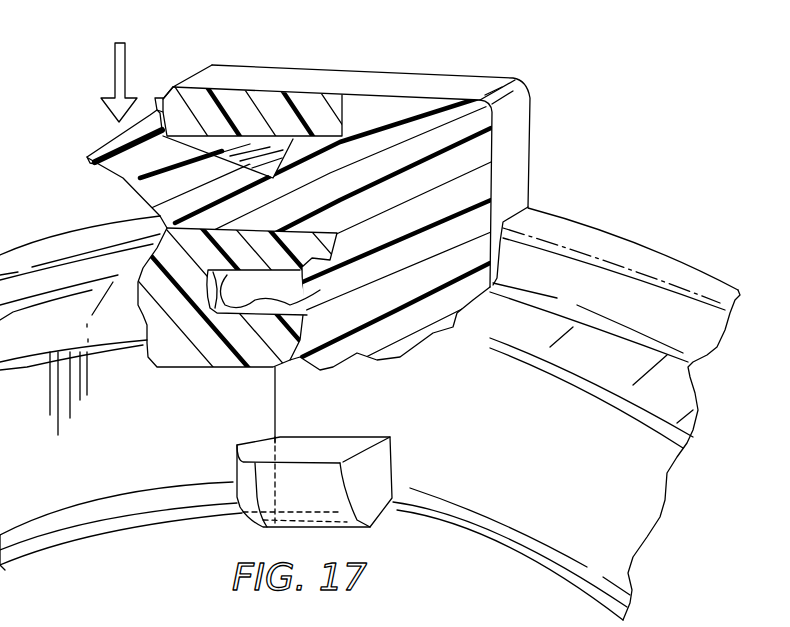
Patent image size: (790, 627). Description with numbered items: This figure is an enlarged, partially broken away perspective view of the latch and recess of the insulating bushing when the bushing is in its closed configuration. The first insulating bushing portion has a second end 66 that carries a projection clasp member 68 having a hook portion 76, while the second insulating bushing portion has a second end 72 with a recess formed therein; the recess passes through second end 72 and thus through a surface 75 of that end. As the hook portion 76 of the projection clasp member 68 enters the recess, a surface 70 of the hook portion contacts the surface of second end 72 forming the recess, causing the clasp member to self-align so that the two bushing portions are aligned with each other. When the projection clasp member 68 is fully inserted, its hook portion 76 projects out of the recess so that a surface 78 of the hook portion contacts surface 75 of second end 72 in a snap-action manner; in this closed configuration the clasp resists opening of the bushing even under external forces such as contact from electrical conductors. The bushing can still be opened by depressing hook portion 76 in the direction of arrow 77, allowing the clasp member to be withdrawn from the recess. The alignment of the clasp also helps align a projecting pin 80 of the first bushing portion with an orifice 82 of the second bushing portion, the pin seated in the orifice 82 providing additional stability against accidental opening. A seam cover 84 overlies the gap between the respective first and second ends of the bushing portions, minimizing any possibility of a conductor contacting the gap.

The second end 66 is at (480, 68).
The projection clasp member 68 is at (88, 164).
The surface 70 is at (110, 140).
The second end 72 is at (270, 76).
The surface 75 is at (160, 97).
The hook portion 76 is at (152, 105).
The arrow 77 is at (115, 72).
The surface 78 is at (163, 142).
The projecting pin 80 is at (260, 292).
The orifice 82 is at (227, 298).
The seam cover 84 is at (320, 497).